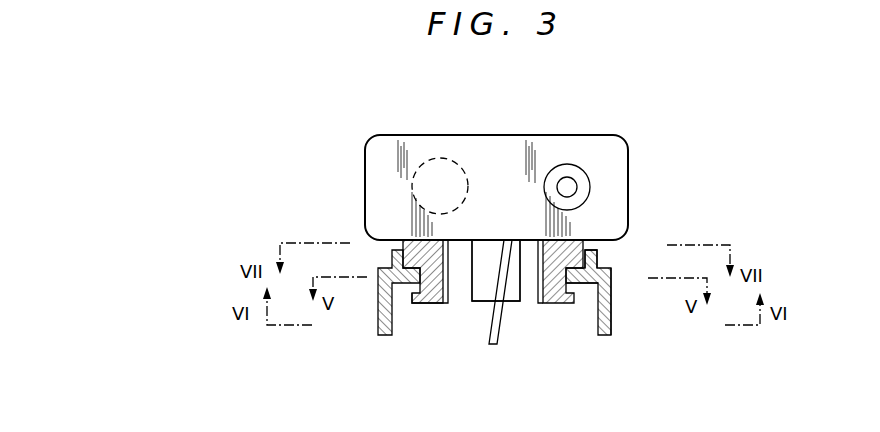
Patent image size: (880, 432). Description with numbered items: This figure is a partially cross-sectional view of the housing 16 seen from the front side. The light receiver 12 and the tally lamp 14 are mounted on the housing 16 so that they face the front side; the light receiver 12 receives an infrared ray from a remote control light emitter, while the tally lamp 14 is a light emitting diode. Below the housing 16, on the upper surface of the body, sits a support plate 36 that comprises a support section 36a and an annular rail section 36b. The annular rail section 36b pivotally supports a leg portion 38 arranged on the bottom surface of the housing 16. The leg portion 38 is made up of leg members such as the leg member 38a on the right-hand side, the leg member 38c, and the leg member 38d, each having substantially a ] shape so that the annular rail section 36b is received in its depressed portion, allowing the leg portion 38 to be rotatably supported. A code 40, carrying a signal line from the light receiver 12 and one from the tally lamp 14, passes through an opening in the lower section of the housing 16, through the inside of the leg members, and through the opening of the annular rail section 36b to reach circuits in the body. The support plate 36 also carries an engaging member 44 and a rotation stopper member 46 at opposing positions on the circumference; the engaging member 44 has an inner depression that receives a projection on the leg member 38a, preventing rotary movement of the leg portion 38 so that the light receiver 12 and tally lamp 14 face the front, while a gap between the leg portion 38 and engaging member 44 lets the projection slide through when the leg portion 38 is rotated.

The light receiver 12 is at (459, 140).
The tally lamp 14 is at (584, 167).
The housing 16 is at (363, 189).
The support plate 36 is at (618, 335).
The support section 36a is at (613, 298).
The annular rail section 36b is at (591, 287).
The leg portion 38 is at (437, 309).
The leg member 38a is at (582, 245).
The leg member 38c is at (419, 304).
The leg member 38d is at (515, 303).
The code 40 is at (493, 345).
The engaging member 44 is at (602, 258).
The rotation stopper member 46 is at (392, 262).